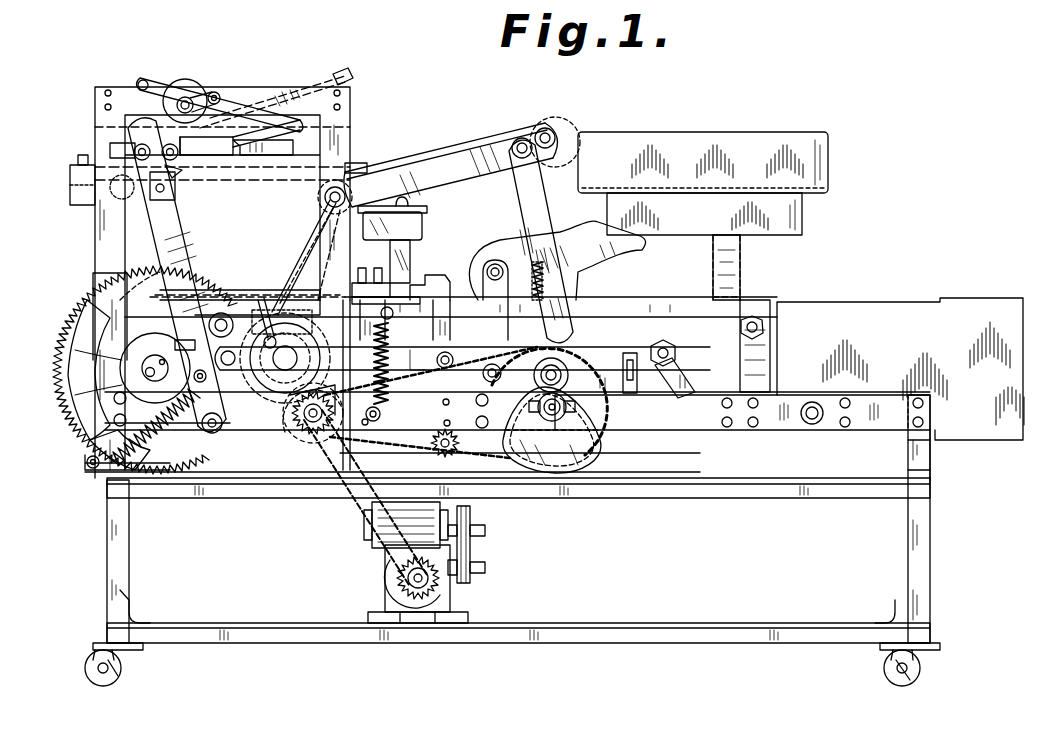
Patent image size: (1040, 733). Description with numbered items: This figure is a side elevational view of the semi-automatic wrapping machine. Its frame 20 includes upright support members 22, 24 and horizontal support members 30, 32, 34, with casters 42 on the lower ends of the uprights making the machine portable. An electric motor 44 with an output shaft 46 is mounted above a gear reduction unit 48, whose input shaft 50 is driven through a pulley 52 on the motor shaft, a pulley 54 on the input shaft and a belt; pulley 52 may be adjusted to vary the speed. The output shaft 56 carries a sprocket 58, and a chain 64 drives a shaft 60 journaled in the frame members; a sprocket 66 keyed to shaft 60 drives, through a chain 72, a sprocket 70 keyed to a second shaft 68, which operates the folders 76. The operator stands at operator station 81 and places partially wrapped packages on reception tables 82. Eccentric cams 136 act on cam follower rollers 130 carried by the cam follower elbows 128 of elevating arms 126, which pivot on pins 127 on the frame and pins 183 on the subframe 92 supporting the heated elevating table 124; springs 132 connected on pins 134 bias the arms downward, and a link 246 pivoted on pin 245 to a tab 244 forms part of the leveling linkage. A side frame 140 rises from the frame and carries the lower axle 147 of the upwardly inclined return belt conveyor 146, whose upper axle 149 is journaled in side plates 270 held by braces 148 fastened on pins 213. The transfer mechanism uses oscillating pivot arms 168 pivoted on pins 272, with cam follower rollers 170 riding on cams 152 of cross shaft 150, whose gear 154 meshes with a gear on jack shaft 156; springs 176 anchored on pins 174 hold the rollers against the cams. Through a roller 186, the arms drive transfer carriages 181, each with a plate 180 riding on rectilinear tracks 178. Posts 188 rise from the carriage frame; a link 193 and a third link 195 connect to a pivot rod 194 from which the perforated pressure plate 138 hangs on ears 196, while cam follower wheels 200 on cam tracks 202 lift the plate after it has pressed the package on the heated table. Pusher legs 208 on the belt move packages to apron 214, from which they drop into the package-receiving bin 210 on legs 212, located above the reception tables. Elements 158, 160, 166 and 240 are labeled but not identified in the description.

The frame 20 is at (918, 558).
The upright support member 22 is at (110, 560).
The upright support member 24 is at (918, 582).
The horizontal support member 30 is at (263, 638).
The horizontal support member 32 is at (270, 486).
The horizontal support member 34 is at (673, 426).
The casters 42 is at (103, 688).
The electric motor 44 is at (380, 531).
The output shaft 46 is at (487, 530).
The gear reduction unit 48 is at (460, 598).
The input shaft 50 is at (488, 571).
The pulley 52 is at (470, 510).
The pulley 54 is at (466, 560).
The output shaft 56 is at (410, 580).
The sprocket 58 is at (398, 567).
The shaft 60 is at (303, 440).
The chain 64 is at (340, 500).
The sprocket 66 is at (322, 452).
The second shaft 68 is at (560, 411).
The sprocket 70 is at (578, 400).
The chain 72 is at (431, 402).
The folders 76 is at (598, 258).
The operator station 81 is at (952, 505).
The reception tables 82 is at (953, 297).
The subframe 92 is at (276, 311).
The heated elevating table 124 is at (236, 293).
The elevating arm 126 is at (636, 312).
The pins 127 is at (760, 318).
The cam follower elbow 128 is at (582, 350).
The cam follower roller 130 is at (566, 378).
The springs 132 is at (390, 332).
The pins 134 is at (70, 190).
The cams 136 is at (583, 452).
The perforated pressure plate 138 is at (265, 155).
The side frame 140 is at (100, 250).
The return belt conveyor 146 is at (455, 134).
The axle 147 is at (323, 197).
The braces 148 is at (535, 212).
The axle 149 is at (545, 128).
The cross shaft 150 is at (154, 366).
The cams 152 is at (148, 378).
The gear 154 is at (53, 365).
The jack shaft 156 is at (310, 358).
The ring 158 is at (294, 358).
The guide 160 is at (290, 432).
The link 166 is at (298, 241).
The oscillating pivot arms 168 is at (172, 253).
The cam follower rollers 170 is at (220, 396).
The pins 174 is at (88, 463).
The springs 176 is at (140, 438).
The rectilinear tracks 178 is at (293, 170).
The plate 180 is at (172, 176).
The transfer carriages 181 is at (177, 170).
The pins 183 is at (212, 327).
The roller 186 is at (130, 147).
The posts 188 is at (140, 90).
The link 193 is at (213, 95).
The pivot rod 194 is at (266, 108).
The third link 195 is at (238, 102).
The ears 196 is at (234, 136).
The cam follower wheels 200 is at (187, 80).
The cam tracks 202 is at (345, 78).
The pusher legs 208 is at (378, 163).
The package-receiving bin 210 is at (805, 168).
The legs 212 is at (730, 275).
The pins 213 is at (517, 156).
The apron 214 is at (570, 132).
The block 240 is at (206, 320).
The tab 244 is at (425, 410).
The pin 245 is at (460, 354).
The link 246 is at (410, 353).
The side plates 270 is at (490, 150).
The pins 272 is at (220, 440).